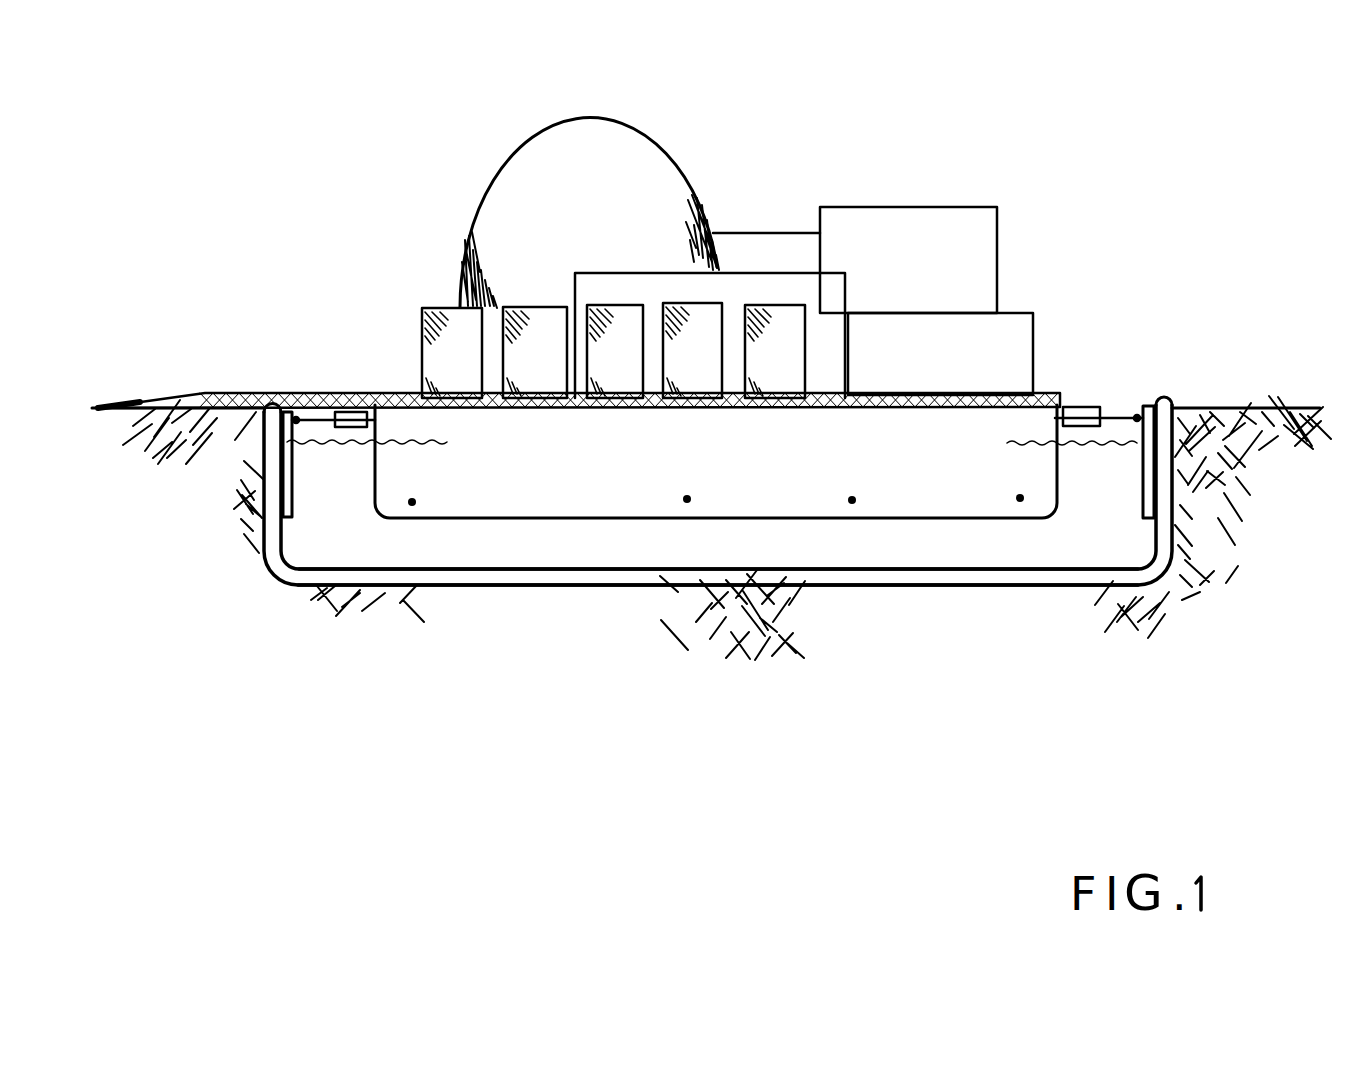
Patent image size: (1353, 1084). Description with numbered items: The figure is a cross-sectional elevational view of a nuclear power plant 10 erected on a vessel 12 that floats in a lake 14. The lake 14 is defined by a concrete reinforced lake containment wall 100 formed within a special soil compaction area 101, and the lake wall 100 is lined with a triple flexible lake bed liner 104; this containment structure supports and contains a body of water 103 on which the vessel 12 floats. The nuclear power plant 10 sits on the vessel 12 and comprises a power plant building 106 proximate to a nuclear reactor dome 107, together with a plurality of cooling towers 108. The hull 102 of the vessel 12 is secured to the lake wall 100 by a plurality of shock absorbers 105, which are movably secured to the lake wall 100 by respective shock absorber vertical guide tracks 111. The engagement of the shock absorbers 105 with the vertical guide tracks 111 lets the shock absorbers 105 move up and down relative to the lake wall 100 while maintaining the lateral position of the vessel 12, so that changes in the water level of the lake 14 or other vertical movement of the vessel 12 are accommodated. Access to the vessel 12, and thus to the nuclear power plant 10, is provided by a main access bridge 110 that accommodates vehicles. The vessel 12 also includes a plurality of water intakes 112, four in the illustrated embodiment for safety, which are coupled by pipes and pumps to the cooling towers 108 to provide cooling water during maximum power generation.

The nuclear power plant 10 is at (777, 205).
The vessel 12 is at (560, 493).
The lake 14 is at (1097, 537).
The lake containment wall 100 is at (847, 580).
The special soil compaction area 101 is at (1227, 470).
The hull 102 is at (495, 470).
The body of water 103 is at (1113, 437).
The triple flexible lake bed liner 104 is at (907, 567).
The shock absorbers 105 is at (353, 420).
The power plant building 106 is at (980, 270).
The nuclear reactor dome 107 is at (627, 173).
The cooling towers 108 is at (447, 357).
The main access bridge 110 is at (317, 393).
The shock absorber vertical guide tracks 111 is at (143, 574).
The water intakes 112 is at (843, 507).